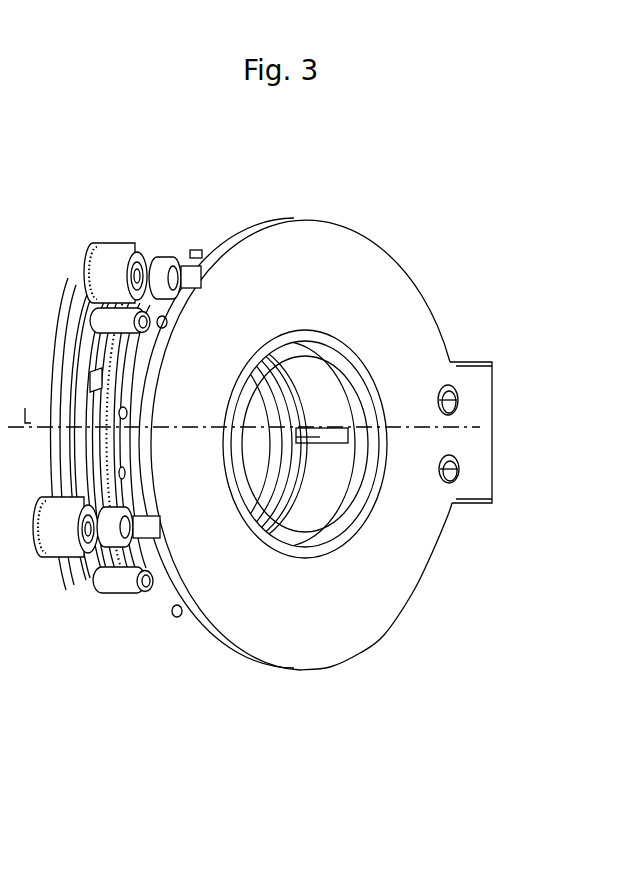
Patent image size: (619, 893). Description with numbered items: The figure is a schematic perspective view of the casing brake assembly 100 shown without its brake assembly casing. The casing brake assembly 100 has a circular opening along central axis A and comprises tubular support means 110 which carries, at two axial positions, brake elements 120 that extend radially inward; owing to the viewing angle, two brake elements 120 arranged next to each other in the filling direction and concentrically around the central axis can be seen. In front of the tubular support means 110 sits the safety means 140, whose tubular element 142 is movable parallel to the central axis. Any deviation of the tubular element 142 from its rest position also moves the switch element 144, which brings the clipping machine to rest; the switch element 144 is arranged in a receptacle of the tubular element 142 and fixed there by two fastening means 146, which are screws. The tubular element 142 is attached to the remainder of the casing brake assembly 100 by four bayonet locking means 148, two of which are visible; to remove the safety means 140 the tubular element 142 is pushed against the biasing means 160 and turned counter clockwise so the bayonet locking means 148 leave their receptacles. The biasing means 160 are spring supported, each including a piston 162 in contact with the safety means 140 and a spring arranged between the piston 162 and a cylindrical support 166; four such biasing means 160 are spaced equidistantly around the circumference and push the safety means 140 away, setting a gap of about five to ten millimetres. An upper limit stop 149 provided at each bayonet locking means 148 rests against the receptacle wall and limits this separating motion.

The casing brake assembly 100 is at (293, 454).
The tubular support means 110 is at (310, 527).
The brake elements 120 is at (240, 393).
The safety means 140 is at (362, 480).
The tubular element 142 is at (330, 640).
The switch element 144 is at (472, 414).
The fastening means 146 is at (455, 398).
The bayonet locking means 148 is at (95, 322).
The upper limit stop 149 is at (150, 594).
The biasing means 160 is at (111, 398).
The piston 162 is at (163, 273).
The cylindrical support 166 is at (107, 263).